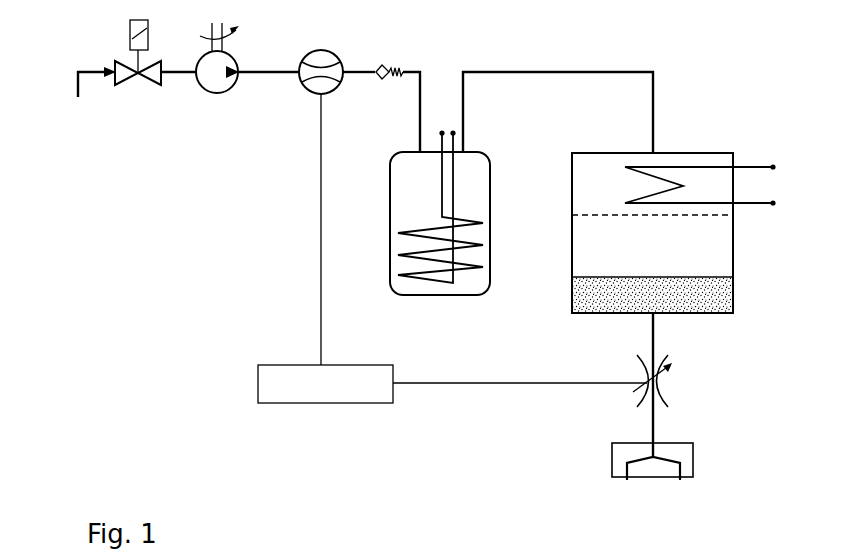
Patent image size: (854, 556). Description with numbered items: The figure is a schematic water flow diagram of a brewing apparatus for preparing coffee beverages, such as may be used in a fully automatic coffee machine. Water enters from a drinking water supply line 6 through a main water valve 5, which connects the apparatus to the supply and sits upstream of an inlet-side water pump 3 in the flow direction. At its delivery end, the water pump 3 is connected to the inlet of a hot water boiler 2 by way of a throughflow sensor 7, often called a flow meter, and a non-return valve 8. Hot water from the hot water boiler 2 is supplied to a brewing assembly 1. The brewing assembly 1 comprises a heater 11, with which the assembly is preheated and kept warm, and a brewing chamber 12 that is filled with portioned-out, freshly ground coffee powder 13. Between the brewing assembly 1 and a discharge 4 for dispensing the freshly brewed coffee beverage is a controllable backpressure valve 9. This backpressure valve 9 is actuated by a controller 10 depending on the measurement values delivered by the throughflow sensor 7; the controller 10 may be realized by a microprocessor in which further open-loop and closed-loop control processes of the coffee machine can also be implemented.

The brewing assembly 1 is at (696, 207).
The hot water boiler 2 is at (487, 160).
The water pump 3 is at (228, 92).
The discharge 4 is at (694, 453).
The main water valve 5 is at (135, 80).
The drinking water supply line 6 is at (78, 88).
The throughflow sensor 7 is at (330, 50).
The non-return valve 8 is at (390, 65).
The backpressure valve 9 is at (660, 388).
The controller 10 is at (362, 403).
The heater 11 is at (748, 165).
The brewing chamber 12 is at (708, 258).
The coffee powder 13 is at (708, 298).